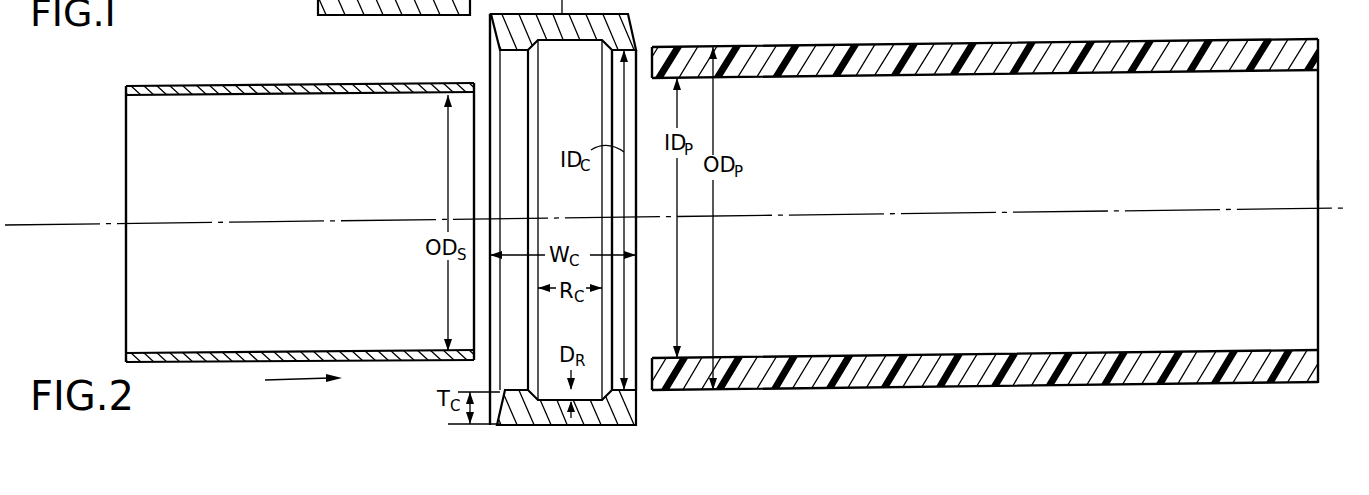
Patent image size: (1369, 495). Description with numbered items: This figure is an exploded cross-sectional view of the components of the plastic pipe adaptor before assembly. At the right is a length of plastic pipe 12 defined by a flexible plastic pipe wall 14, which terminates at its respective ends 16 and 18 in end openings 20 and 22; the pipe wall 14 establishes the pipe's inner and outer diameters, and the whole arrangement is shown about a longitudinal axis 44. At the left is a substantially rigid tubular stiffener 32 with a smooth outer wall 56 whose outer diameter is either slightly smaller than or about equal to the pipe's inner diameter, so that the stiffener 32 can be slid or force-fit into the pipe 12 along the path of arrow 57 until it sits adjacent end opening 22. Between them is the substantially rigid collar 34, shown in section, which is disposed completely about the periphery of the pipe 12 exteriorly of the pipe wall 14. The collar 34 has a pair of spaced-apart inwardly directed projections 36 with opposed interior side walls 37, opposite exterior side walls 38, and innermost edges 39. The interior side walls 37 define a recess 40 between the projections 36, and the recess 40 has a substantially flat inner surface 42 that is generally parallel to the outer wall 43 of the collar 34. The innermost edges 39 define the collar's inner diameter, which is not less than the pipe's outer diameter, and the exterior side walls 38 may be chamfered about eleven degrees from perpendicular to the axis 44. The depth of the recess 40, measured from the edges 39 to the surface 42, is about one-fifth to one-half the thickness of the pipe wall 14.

In FIG. 2, the plastic pipe 12 is at (977, 215).
In FIG. 2, the pipe wall 14 is at (1046, 48).
In FIG. 2, the end 16 is at (1320, 150).
In FIG. 2, the end 18 is at (656, 46).
In FIG. 2, the end opening 20 is at (1310, 184).
In FIG. 2, the end opening 22 is at (680, 372).
In FIG. 2, the stiffener 32 is at (276, 80).
In FIG. 2, the collar 34 is at (618, 11).
In FIG. 2, the projections 36 is at (515, 57).
In FIG. 2, the interior side walls 37 is at (536, 43).
In FIG. 1, the exterior side walls 38 is at (272, 12).
In FIG. 2, the exterior side walls 38 is at (498, 44).
In FIG. 2, the innermost edges 39 is at (500, 52).
In FIG. 1, the recess 40 is at (366, 16).
In FIG. 2, the recess 40 is at (687, 220).
In FIG. 2, the inner surface 42 is at (732, 193).
In FIG. 1, the outer wall 43 is at (345, 21).
In FIG. 2, the longitudinal axis 44 is at (825, 222).
In FIG. 1, the outer wall 56 is at (179, 12).
In FIG. 2, the outer wall 56 is at (163, 86).
In FIG. 2, the arrow 57 is at (266, 381).